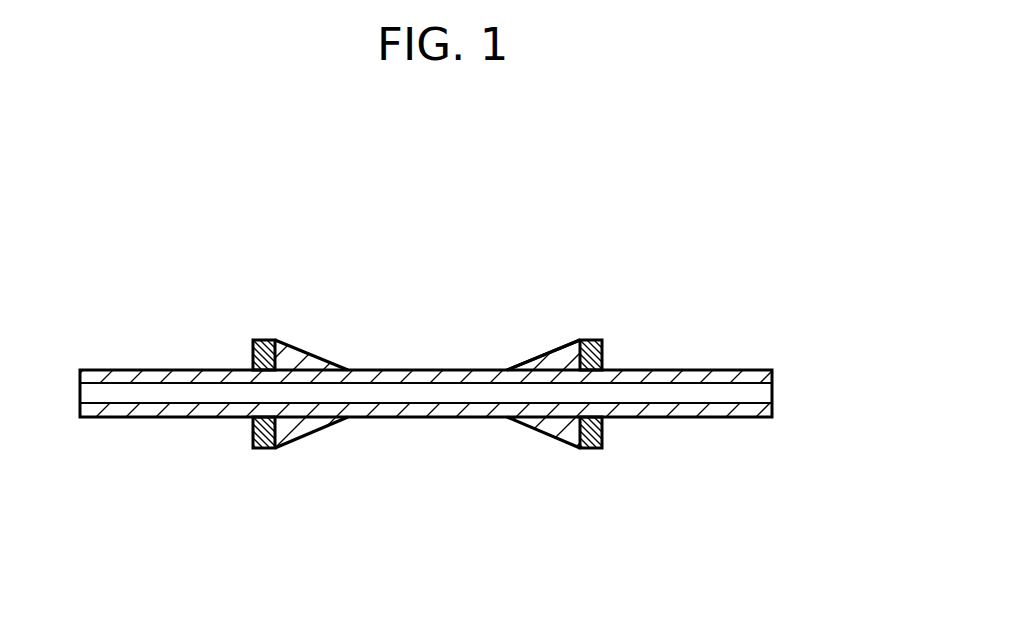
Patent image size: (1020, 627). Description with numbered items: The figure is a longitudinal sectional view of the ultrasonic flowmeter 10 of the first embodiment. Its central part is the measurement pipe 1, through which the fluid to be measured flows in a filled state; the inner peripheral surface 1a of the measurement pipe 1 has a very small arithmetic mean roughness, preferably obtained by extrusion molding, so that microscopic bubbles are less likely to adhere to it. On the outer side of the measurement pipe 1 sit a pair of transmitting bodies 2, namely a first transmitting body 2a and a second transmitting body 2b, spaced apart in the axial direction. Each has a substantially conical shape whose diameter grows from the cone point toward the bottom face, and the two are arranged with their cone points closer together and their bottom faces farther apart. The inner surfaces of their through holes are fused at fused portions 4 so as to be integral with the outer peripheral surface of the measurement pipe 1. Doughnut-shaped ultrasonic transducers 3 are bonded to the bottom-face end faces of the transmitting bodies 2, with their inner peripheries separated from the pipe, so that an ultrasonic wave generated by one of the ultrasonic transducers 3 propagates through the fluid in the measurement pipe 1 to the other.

The ultrasonic flowmeter 10 is at (597, 206).
The measurement pipe 1 is at (365, 418).
The inner peripheral surface 1a is at (445, 383).
The transmitting bodies 2 is at (401, 401).
The first transmitting body 2a is at (298, 348).
The second transmitting body 2b is at (562, 430).
The ultrasonic transducers 3 is at (263, 340).
The fused portions 4 is at (548, 363).